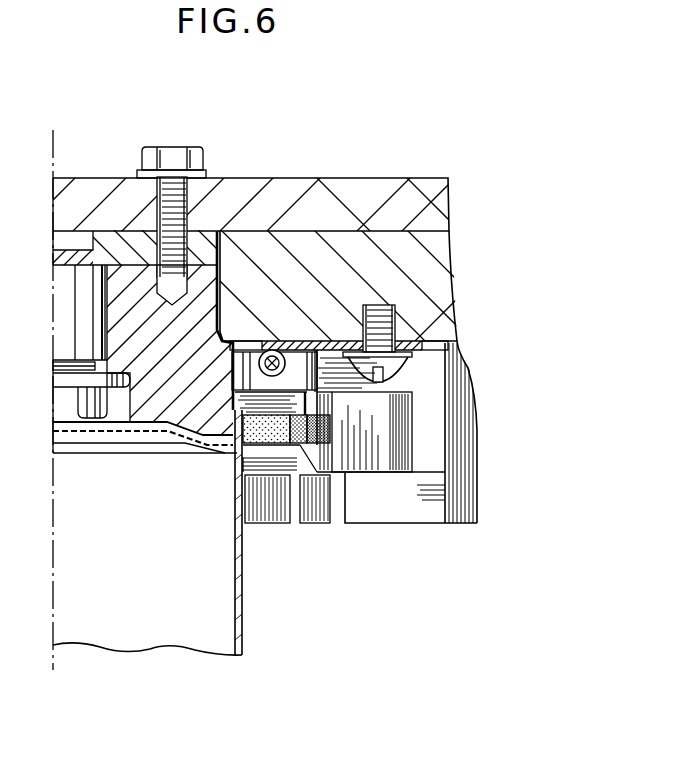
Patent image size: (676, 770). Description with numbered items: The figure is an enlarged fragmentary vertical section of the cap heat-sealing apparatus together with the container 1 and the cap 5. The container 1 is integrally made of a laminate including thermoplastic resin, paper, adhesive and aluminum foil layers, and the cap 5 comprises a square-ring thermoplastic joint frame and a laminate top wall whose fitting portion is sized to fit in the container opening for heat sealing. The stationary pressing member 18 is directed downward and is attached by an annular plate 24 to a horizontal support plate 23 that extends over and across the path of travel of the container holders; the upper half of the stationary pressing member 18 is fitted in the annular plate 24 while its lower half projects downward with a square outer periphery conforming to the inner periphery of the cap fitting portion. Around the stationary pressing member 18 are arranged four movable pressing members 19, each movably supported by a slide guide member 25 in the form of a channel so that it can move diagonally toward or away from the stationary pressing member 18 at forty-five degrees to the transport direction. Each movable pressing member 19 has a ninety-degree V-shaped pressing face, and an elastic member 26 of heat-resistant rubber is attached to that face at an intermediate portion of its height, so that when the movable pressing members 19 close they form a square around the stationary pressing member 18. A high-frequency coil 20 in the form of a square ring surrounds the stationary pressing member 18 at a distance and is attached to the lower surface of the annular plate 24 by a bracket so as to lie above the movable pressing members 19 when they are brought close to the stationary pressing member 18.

The container 1 is at (240, 607).
The cap 5 is at (133, 440).
The stationary pressing member 18 is at (203, 410).
The movable pressing member 19 is at (348, 460).
The high-frequency coil 20 is at (272, 349).
The support plate 23 is at (380, 197).
The annular plate 24 is at (428, 287).
The slide guide member 25 is at (410, 515).
The elastic member 26 is at (297, 440).